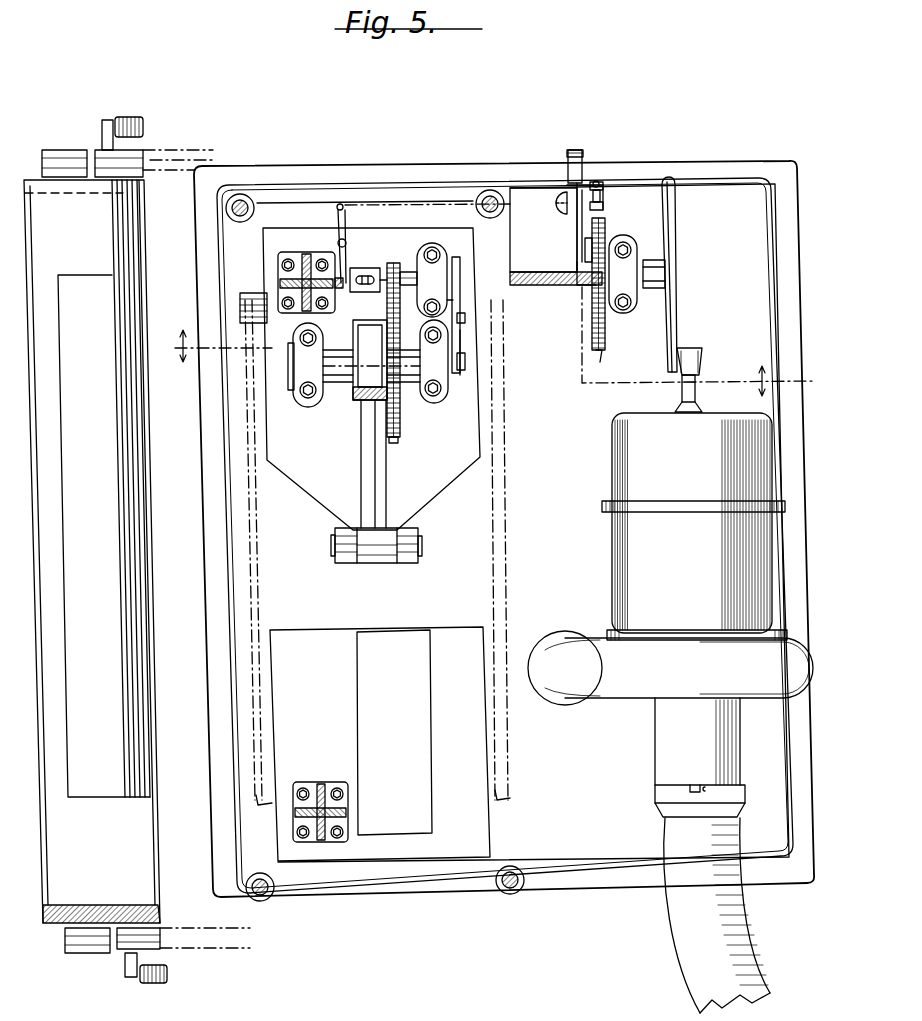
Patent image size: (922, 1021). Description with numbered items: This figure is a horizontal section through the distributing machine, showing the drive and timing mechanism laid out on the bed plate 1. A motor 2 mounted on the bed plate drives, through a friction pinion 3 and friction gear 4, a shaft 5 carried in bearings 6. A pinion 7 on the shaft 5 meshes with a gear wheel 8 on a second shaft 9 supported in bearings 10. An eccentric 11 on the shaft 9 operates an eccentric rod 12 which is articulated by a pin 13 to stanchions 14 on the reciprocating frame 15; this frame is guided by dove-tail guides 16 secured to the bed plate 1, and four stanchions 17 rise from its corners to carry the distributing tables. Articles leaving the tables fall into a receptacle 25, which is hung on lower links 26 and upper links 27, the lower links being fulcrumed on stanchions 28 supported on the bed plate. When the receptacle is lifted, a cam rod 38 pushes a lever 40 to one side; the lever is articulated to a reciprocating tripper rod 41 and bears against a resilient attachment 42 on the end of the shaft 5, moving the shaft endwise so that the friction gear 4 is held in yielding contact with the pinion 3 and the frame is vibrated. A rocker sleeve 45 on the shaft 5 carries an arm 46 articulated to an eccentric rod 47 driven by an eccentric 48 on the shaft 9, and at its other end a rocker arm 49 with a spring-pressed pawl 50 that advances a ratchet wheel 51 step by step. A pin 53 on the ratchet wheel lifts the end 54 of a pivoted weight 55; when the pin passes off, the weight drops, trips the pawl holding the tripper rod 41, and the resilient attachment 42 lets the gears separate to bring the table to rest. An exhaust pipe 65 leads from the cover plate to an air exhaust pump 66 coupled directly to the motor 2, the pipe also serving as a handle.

The bed plate 1 is at (574, 484).
The motor 2 is at (694, 526).
The friction pinion 3 is at (704, 359).
The friction gear 4 is at (676, 211).
The shaft 5 is at (407, 271).
The bearings 6 is at (633, 242).
The pinion 7 is at (390, 262).
The gear wheel 8 is at (400, 433).
The shaft 9 is at (290, 380).
The bearings 10 is at (370, 363).
The eccentric 11 is at (367, 378).
The eccentric rod 12 is at (367, 484).
The pin 13 is at (422, 545).
The stanchions 14 is at (348, 564).
The reciprocating frame 15 is at (380, 710).
The dove-tail guides 16 is at (273, 802).
The stanchions 17 is at (243, 200).
The receptacle 25 is at (92, 551).
The lower links 26 is at (143, 156).
The upper links 27 is at (80, 150).
The stanchions 28 is at (296, 260).
The cam rod 38 is at (339, 289).
The lever 40 is at (338, 243).
The reciprocating tripper rod 41 is at (528, 200).
The resilient attachment 42 is at (571, 187).
The rocker sleeve 45 is at (545, 272).
The arm 46 is at (450, 298).
The eccentric rod 47 is at (462, 333).
The eccentric 48 is at (460, 377).
The rocker arm 49 is at (577, 229).
The spring-pressed pawl 50 is at (606, 235).
The spur gear or ratchet wheel 51 is at (598, 352).
The pin 53 is at (580, 262).
The end of pivoted weight 54 is at (585, 243).
The pivoted weight 55 is at (583, 156).
The exhaust pipe 65 is at (712, 982).
The air exhaust pump 66 is at (670, 668).